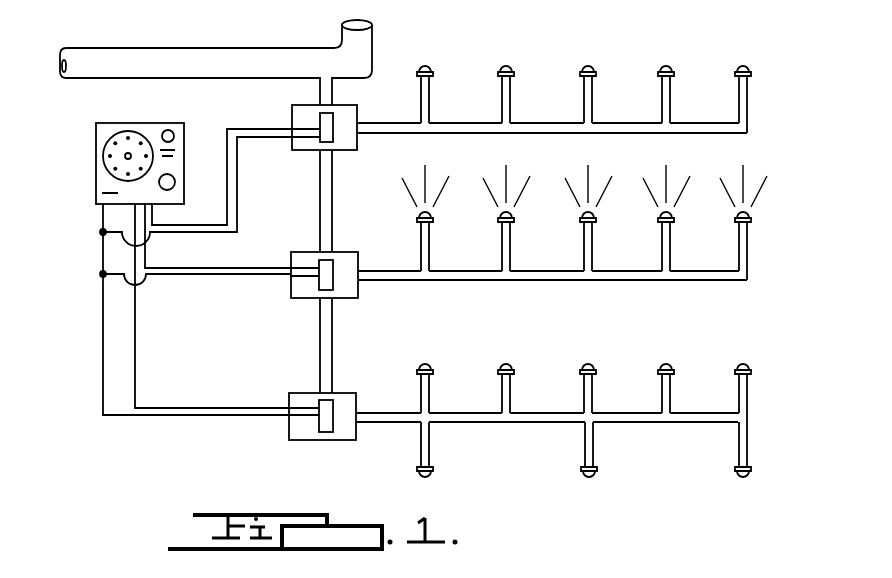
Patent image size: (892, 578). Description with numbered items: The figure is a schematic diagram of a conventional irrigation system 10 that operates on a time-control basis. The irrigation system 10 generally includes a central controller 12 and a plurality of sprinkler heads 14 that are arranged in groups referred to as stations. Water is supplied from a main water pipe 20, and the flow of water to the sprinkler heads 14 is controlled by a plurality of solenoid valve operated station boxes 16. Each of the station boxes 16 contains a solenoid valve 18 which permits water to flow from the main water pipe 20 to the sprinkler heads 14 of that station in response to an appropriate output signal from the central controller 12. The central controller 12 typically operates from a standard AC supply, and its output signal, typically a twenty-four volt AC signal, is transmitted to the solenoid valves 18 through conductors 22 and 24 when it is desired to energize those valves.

The irrigation system 10 is at (128, 447).
The central controller 12 is at (96, 152).
The sprinkler heads 14 is at (741, 66).
The station boxes 16 is at (348, 143).
The solenoid valve 18 is at (330, 118).
The main water pipe 20 is at (357, 55).
The conductor 22 is at (266, 138).
The conductor 24 is at (244, 128).